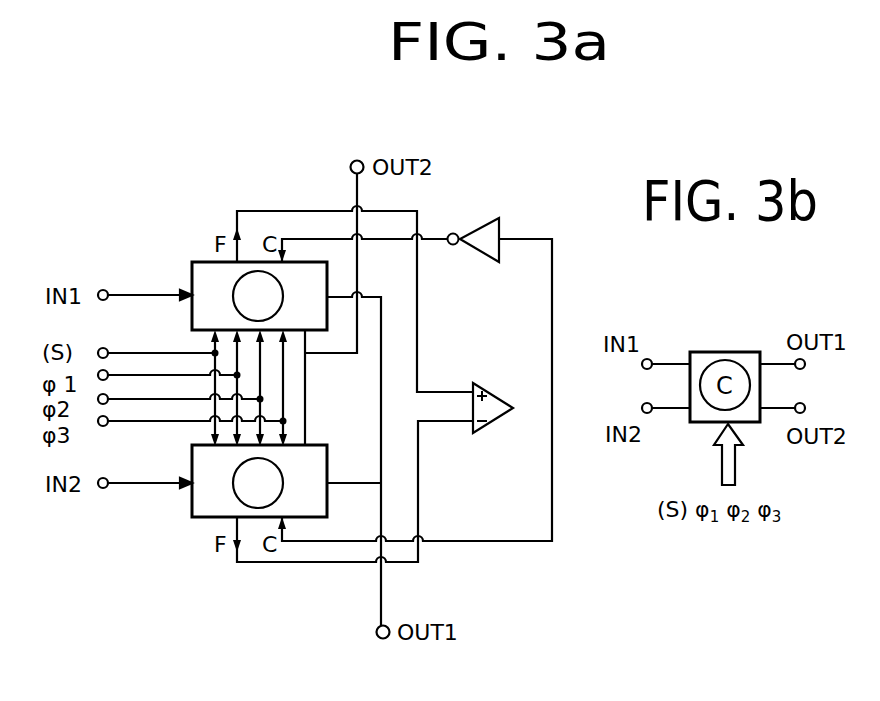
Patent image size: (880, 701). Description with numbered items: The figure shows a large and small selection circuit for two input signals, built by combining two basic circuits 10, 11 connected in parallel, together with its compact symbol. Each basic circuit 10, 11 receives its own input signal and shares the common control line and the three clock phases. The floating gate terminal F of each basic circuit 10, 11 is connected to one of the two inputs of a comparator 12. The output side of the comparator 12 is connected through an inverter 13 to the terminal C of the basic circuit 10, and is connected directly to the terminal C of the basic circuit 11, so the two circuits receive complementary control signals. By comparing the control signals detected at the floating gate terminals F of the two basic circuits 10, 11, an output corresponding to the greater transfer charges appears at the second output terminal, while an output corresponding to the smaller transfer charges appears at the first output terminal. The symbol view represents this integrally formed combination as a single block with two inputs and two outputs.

The basic circuit 10 is at (192, 263).
The basic circuit 11 is at (192, 500).
The comparator 12 is at (492, 392).
The inverter 13 is at (482, 222).